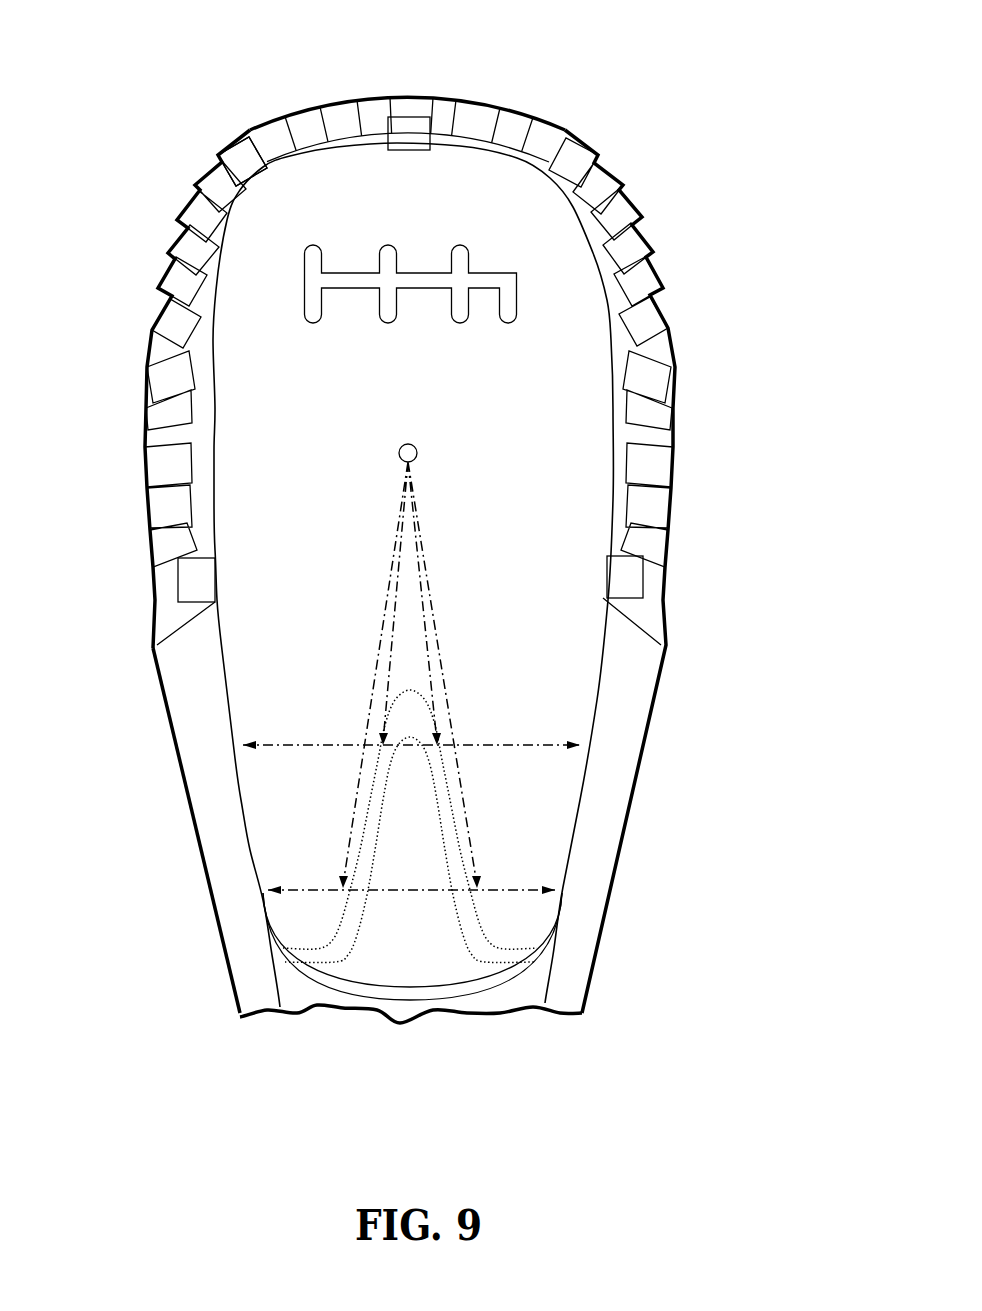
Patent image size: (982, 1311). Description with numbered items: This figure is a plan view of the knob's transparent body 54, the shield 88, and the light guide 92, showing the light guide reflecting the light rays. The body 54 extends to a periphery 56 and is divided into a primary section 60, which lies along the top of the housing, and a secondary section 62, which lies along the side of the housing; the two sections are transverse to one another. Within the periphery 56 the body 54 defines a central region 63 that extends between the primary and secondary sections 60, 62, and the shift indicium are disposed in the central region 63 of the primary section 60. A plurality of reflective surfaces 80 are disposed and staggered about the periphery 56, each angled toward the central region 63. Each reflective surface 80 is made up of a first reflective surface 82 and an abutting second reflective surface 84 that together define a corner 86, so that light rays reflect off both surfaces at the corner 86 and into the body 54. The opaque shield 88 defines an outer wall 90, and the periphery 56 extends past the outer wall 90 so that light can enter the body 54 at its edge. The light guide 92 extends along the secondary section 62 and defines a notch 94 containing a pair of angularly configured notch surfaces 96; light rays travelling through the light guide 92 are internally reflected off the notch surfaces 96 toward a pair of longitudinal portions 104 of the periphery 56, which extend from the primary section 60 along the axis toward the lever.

The body 54 is at (447, 140).
The periphery 56 is at (640, 687).
The primary section 60 is at (517, 195).
The secondary section 62 is at (263, 838).
The central region 63 is at (420, 308).
The reflective surface 80 is at (333, 117).
The first reflective surface 82 is at (268, 143).
The second reflective surface 84 is at (277, 128).
The corner 86 is at (375, 97).
The shield 88 is at (457, 988).
The outer wall 90 is at (387, 993).
The light guide 92 is at (522, 928).
The notch 94 is at (353, 880).
The notch surfaces 96 is at (370, 815).
The longitudinal portions 104 is at (202, 788).